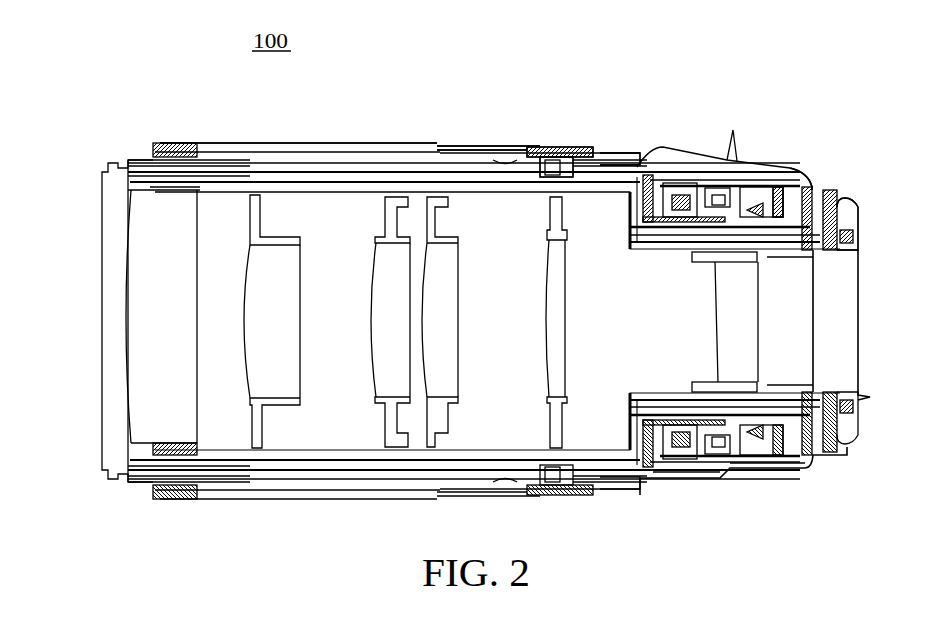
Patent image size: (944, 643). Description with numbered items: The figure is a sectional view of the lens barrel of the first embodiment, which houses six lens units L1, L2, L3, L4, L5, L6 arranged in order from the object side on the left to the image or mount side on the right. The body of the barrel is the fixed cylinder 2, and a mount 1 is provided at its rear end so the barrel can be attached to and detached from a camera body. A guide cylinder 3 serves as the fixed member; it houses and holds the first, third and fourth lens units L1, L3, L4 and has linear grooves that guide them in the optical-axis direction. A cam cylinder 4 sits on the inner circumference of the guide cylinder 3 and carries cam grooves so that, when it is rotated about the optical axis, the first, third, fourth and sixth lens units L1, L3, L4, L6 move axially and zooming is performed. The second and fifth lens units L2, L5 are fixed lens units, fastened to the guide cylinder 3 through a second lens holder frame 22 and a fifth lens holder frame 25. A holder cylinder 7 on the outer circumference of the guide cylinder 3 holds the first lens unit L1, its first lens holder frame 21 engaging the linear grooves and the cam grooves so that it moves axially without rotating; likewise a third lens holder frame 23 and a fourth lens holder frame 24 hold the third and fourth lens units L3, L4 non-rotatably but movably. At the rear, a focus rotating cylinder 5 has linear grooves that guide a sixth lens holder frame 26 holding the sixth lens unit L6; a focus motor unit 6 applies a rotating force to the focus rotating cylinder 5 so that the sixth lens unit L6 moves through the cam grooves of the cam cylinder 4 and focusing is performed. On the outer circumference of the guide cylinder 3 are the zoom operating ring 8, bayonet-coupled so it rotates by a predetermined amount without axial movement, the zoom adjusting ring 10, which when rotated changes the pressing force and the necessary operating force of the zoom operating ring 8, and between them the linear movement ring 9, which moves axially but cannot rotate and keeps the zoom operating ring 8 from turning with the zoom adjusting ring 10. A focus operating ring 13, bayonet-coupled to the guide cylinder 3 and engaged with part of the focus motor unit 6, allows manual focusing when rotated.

The mount 1 is at (838, 207).
The fixed cylinder 2 is at (812, 183).
The guide cylinder 3 is at (543, 177).
The cam cylinder 4 is at (453, 188).
The focus rotating cylinder 5 is at (767, 242).
The focus motor unit 6 is at (733, 130).
The holder cylinder 7 is at (200, 145).
The zoom operating ring 8 is at (407, 143).
The linear movement ring 9 is at (570, 148).
The zoom adjusting ring 10 is at (467, 142).
The focus operating ring 13 is at (620, 157).
The first lens holder frame 21 is at (150, 177).
The second lens holder frame 22 is at (257, 237).
The third lens holder frame 23 is at (392, 235).
The fourth lens holder frame 24 is at (438, 430).
The fifth lens holder frame 25 is at (560, 233).
The sixth lens holder frame 26 is at (707, 382).
The first lens unit L1 is at (137, 285).
The second lens unit L2 is at (265, 302).
The third lens unit L3 is at (390, 298).
The fourth lens unit L4 is at (440, 303).
The fifth lens unit L5 is at (558, 323).
The sixth lens unit L6 is at (740, 312).